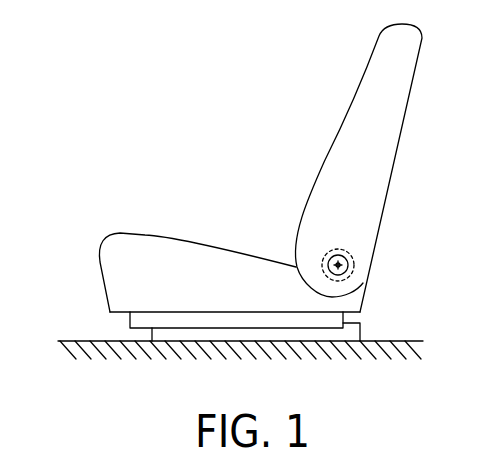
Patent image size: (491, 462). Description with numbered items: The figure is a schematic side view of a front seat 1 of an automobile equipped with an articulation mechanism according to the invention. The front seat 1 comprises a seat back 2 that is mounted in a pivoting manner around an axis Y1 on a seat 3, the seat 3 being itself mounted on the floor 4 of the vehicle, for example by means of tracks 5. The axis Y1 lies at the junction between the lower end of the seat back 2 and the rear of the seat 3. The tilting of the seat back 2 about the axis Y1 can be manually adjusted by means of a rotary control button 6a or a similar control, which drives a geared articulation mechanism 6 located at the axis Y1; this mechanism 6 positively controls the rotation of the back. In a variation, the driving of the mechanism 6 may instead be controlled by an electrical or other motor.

The front seat 1 is at (228, 168).
The seat back 2 is at (375, 188).
The seat 3 is at (167, 255).
The floor 4 is at (70, 340).
The tracks 5 is at (103, 321).
The geared articulation mechanism 6 is at (348, 270).
The rotary control button 6a is at (338, 265).
The axis Y1 is at (350, 262).